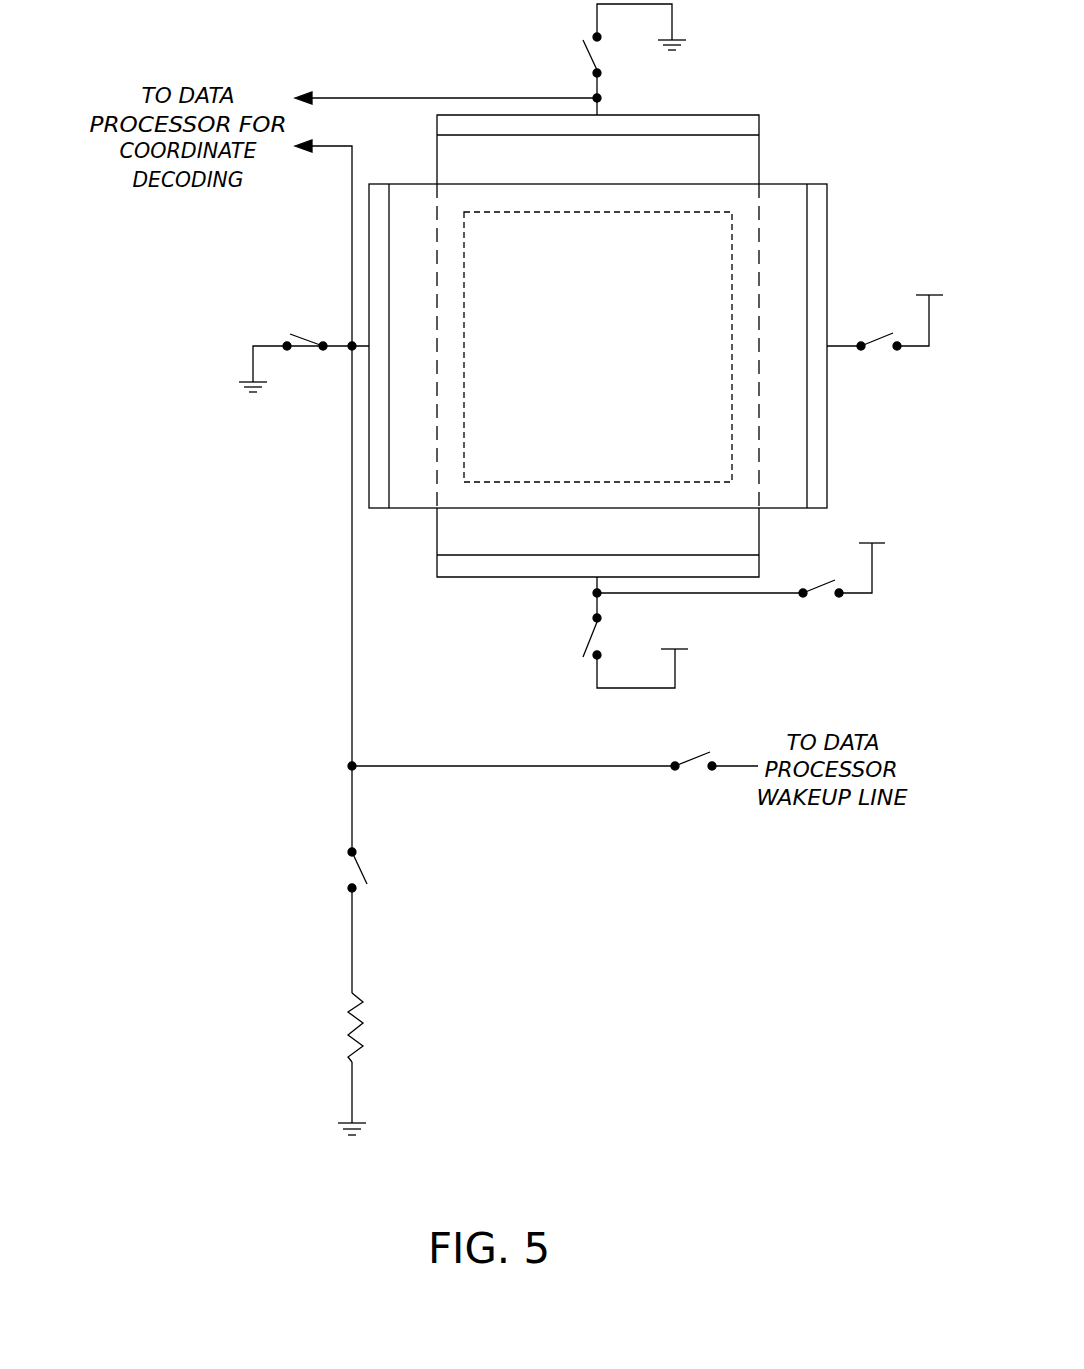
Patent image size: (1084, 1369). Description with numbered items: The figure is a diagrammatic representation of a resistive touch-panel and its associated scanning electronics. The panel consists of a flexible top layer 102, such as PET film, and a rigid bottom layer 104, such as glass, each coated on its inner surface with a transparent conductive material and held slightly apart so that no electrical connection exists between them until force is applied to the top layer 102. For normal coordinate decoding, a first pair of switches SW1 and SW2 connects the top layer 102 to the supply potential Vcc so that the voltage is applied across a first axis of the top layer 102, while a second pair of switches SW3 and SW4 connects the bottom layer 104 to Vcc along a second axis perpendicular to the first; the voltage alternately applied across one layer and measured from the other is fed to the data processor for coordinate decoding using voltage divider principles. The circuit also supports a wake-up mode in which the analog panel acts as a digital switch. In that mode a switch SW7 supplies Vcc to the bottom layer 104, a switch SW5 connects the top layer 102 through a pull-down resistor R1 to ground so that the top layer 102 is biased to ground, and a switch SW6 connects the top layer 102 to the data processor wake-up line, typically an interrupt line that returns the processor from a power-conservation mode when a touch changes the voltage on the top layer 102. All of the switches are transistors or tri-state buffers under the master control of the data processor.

The rigid bottom layer 104 is at (742, 158).
The flexible top layer 102 is at (788, 200).
The switch SW1 is at (885, 304).
The switch SW2 is at (304, 348).
The switch SW3 is at (610, 650).
The switch SW4 is at (607, 59).
The switch SW5 is at (326, 870).
The switch SW6 is at (555, 743).
The switch SW7 is at (742, 551).
The pull-down resistor R1 is at (377, 1011).